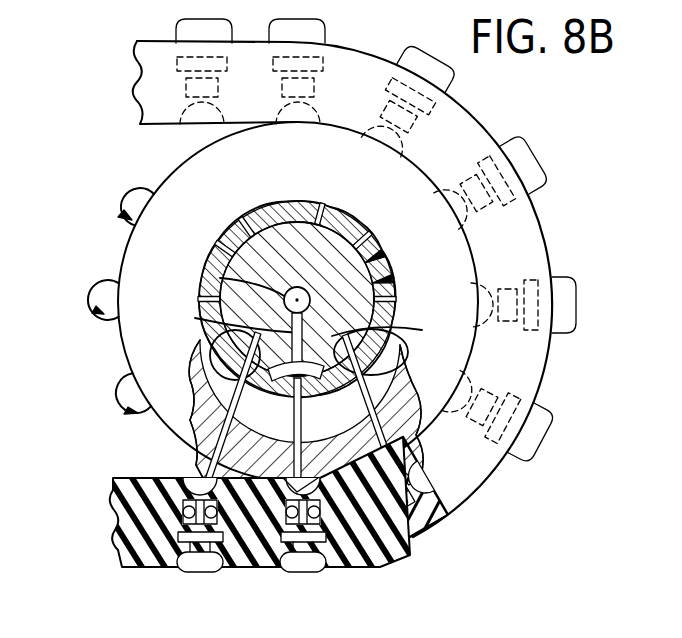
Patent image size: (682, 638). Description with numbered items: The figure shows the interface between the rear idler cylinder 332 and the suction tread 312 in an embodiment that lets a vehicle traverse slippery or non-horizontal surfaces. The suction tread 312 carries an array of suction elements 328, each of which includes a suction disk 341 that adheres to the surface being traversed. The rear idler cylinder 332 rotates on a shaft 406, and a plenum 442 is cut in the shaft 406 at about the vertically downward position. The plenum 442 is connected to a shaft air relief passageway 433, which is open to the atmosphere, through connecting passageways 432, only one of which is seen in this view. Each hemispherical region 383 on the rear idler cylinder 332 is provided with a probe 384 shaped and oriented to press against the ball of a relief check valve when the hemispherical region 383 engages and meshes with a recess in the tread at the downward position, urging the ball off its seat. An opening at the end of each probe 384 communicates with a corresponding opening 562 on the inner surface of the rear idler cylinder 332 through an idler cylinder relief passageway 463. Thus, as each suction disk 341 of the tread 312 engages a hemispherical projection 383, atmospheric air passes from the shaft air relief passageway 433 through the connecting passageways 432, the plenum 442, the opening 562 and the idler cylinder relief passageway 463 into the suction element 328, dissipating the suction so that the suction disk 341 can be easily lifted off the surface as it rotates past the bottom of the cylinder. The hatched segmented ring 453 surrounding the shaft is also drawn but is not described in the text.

The suction tread 312 is at (478, 123).
The rear idler cylinder 332 is at (120, 258).
The hemispherical region 383 is at (100, 295).
The probe 384 is at (116, 210).
The segmented hatched ring 453 is at (321, 210).
The shaft 406 is at (250, 250).
The shaft air relief passageway 433 is at (234, 283).
The connecting passageway 432 is at (234, 322).
The opening 562 is at (232, 345).
The plenum 442 is at (216, 376).
The idler cylinder relief passageway 463 is at (182, 440).
The suction element 328 is at (140, 570).
The suction disk 341 is at (170, 572).